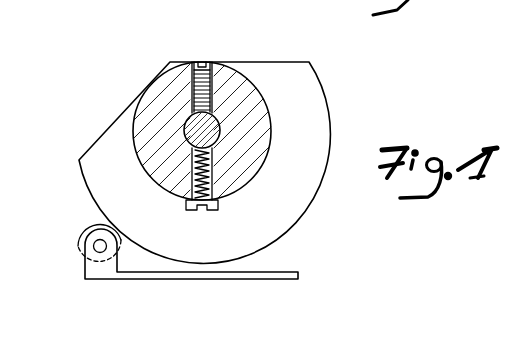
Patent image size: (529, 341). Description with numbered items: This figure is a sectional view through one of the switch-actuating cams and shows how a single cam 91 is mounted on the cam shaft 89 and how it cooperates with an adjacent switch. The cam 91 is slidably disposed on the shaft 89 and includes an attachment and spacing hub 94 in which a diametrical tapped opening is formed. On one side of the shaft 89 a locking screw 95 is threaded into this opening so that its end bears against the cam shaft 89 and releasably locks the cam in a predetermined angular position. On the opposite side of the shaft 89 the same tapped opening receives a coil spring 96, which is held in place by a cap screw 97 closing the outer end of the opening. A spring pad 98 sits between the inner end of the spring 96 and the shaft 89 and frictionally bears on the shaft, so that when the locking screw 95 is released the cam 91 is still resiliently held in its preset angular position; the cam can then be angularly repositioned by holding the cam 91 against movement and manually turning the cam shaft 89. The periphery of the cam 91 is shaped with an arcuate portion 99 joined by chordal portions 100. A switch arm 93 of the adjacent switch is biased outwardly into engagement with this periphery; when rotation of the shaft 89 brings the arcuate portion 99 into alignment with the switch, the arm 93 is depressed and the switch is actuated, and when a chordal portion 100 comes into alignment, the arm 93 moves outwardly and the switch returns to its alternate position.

The cam 91 is at (317, 209).
The switch arm 93 is at (79, 241).
The attachment and spacing hub 94 is at (150, 162).
The locking screw 95 is at (193, 80).
The coil spring 96 is at (196, 178).
The cap screw 97 is at (218, 208).
The spring pad 98 is at (214, 153).
The arcuate portion 99 is at (288, 228).
The chordal portion 100 is at (241, 60).
The cam shaft 89 is at (221, 123).